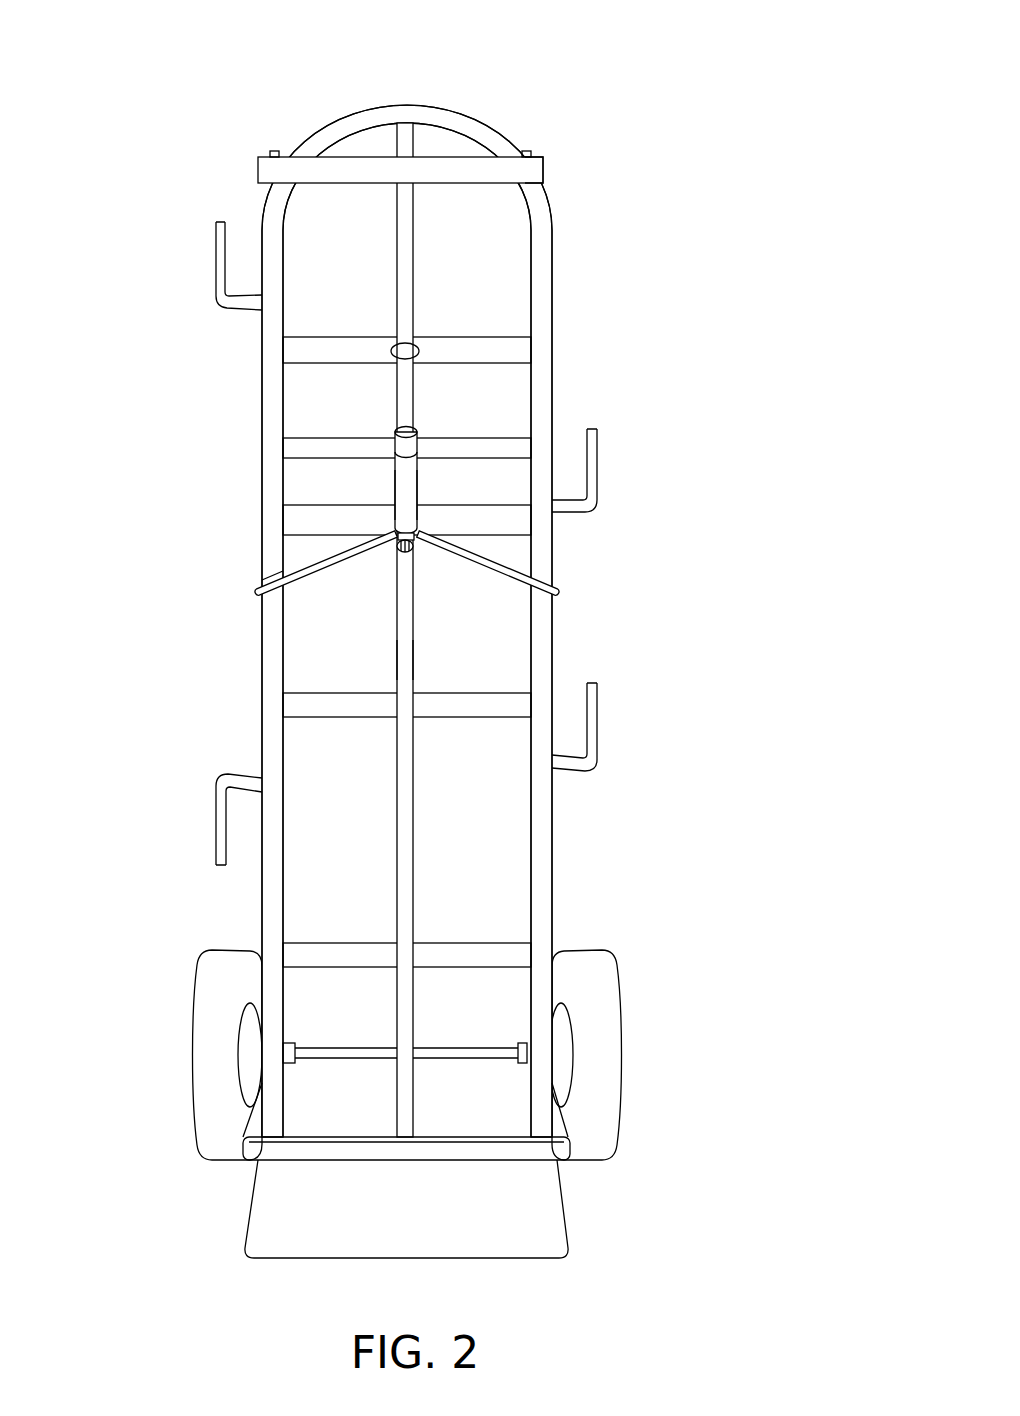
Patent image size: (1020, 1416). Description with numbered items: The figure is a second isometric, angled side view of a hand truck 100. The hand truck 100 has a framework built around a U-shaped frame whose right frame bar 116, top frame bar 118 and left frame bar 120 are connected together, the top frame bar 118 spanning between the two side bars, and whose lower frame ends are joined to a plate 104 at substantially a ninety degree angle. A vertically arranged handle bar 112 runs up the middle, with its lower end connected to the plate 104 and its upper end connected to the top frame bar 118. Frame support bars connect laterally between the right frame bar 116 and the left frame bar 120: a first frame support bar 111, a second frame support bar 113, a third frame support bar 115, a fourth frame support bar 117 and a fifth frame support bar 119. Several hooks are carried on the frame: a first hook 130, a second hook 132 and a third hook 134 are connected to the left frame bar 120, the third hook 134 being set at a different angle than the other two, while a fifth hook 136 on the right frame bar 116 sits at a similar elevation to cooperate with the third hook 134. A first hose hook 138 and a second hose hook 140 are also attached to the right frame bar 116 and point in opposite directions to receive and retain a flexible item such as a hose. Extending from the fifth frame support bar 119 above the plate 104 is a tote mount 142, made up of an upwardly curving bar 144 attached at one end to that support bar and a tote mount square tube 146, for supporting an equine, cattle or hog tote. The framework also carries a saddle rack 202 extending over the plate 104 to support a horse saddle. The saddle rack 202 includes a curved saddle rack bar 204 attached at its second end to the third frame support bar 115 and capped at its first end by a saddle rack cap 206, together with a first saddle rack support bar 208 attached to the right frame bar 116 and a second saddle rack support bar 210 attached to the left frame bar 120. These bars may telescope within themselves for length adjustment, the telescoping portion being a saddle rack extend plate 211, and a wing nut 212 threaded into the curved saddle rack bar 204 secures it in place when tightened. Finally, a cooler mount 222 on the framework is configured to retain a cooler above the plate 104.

The hand truck 100 is at (364, 117).
The plate 104 is at (548, 1240).
The first frame support bar 111 is at (513, 950).
The handle bar 112 is at (395, 548).
The second frame support bar 113 is at (517, 700).
The third frame support bar 115 is at (522, 527).
The right frame bar 116 is at (268, 638).
The fourth frame support bar 117 is at (523, 450).
The top frame bar 118 is at (418, 113).
The fifth frame support bar 119 is at (517, 352).
The left frame bar 120 is at (547, 632).
The first hook 130 is at (595, 748).
The second hook 132 is at (594, 476).
The third hook 134 is at (532, 168).
The fifth hook 136 is at (274, 151).
The first hose hook 138 is at (213, 257).
The second hose hook 140 is at (215, 830).
The tote mount 142 is at (404, 235).
The upwardly curving bar 144 is at (404, 312).
The tote mount square tube 146 is at (543, 158).
The saddle rack 202 is at (396, 475).
The curved saddle rack bar 204 is at (396, 513).
The saddle rack cap 206 is at (396, 440).
The first saddle rack support bar 208 is at (277, 582).
The second saddle rack support bar 210 is at (557, 590).
The saddle rack extend plate 211 is at (310, 580).
The wing nut 212 is at (400, 657).
The cooler mount 222 is at (538, 1152).